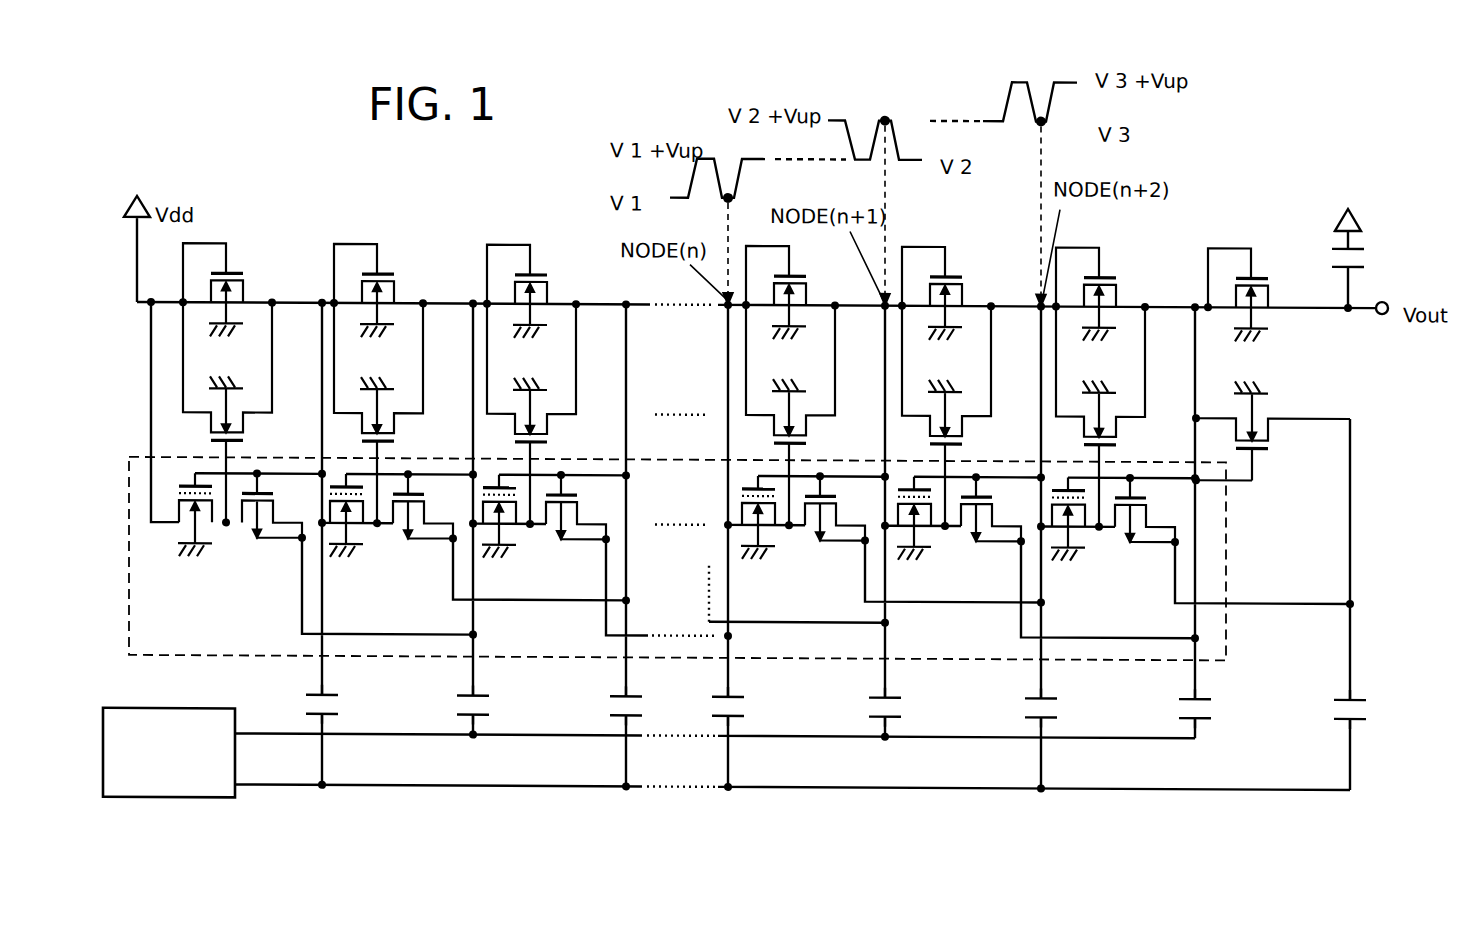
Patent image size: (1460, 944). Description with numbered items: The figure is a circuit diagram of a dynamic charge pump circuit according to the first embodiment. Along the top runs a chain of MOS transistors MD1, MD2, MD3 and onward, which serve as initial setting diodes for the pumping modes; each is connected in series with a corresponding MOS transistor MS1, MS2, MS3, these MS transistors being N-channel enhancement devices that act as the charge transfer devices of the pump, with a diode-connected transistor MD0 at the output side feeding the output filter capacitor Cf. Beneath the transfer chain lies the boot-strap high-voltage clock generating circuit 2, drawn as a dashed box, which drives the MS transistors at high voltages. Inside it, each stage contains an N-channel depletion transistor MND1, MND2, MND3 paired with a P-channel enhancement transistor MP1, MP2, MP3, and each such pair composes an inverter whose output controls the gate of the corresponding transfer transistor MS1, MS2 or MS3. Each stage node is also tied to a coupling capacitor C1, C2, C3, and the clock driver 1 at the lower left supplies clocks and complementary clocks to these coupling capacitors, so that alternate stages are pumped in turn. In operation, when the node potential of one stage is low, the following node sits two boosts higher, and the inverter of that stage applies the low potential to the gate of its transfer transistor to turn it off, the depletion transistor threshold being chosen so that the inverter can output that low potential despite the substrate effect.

The clock driver 1 is at (193, 798).
The boot-strap high-voltage clock generating circuit 2 is at (1227, 568).
The MOS transistor MD1 is at (236, 290).
The MOS transistor MS1 is at (240, 414).
The N-channel depletion transistor MND1 is at (211, 534).
The P-channel enhancement transistor MP1 is at (271, 517).
The coupling capacitor C1 is at (336, 705).
The MOS transistor MD2 is at (388, 291).
The MOS transistor MS2 is at (392, 415).
The N-channel depletion transistor MND2 is at (364, 535).
The P-channel enhancement transistor MP2 is at (423, 518).
The coupling capacitor C2 is at (488, 706).
The MOS transistor MD3 is at (538, 292).
The MOS transistor MS3 is at (544, 416).
The N-channel depletion transistor MND3 is at (516, 537).
The P-channel enhancement transistor MP3 is at (578, 519).
The coupling capacitor C3 is at (641, 707).
The output diode-connected transistor MD0 is at (1255, 294).
The output filter capacitor Cf is at (1361, 261).